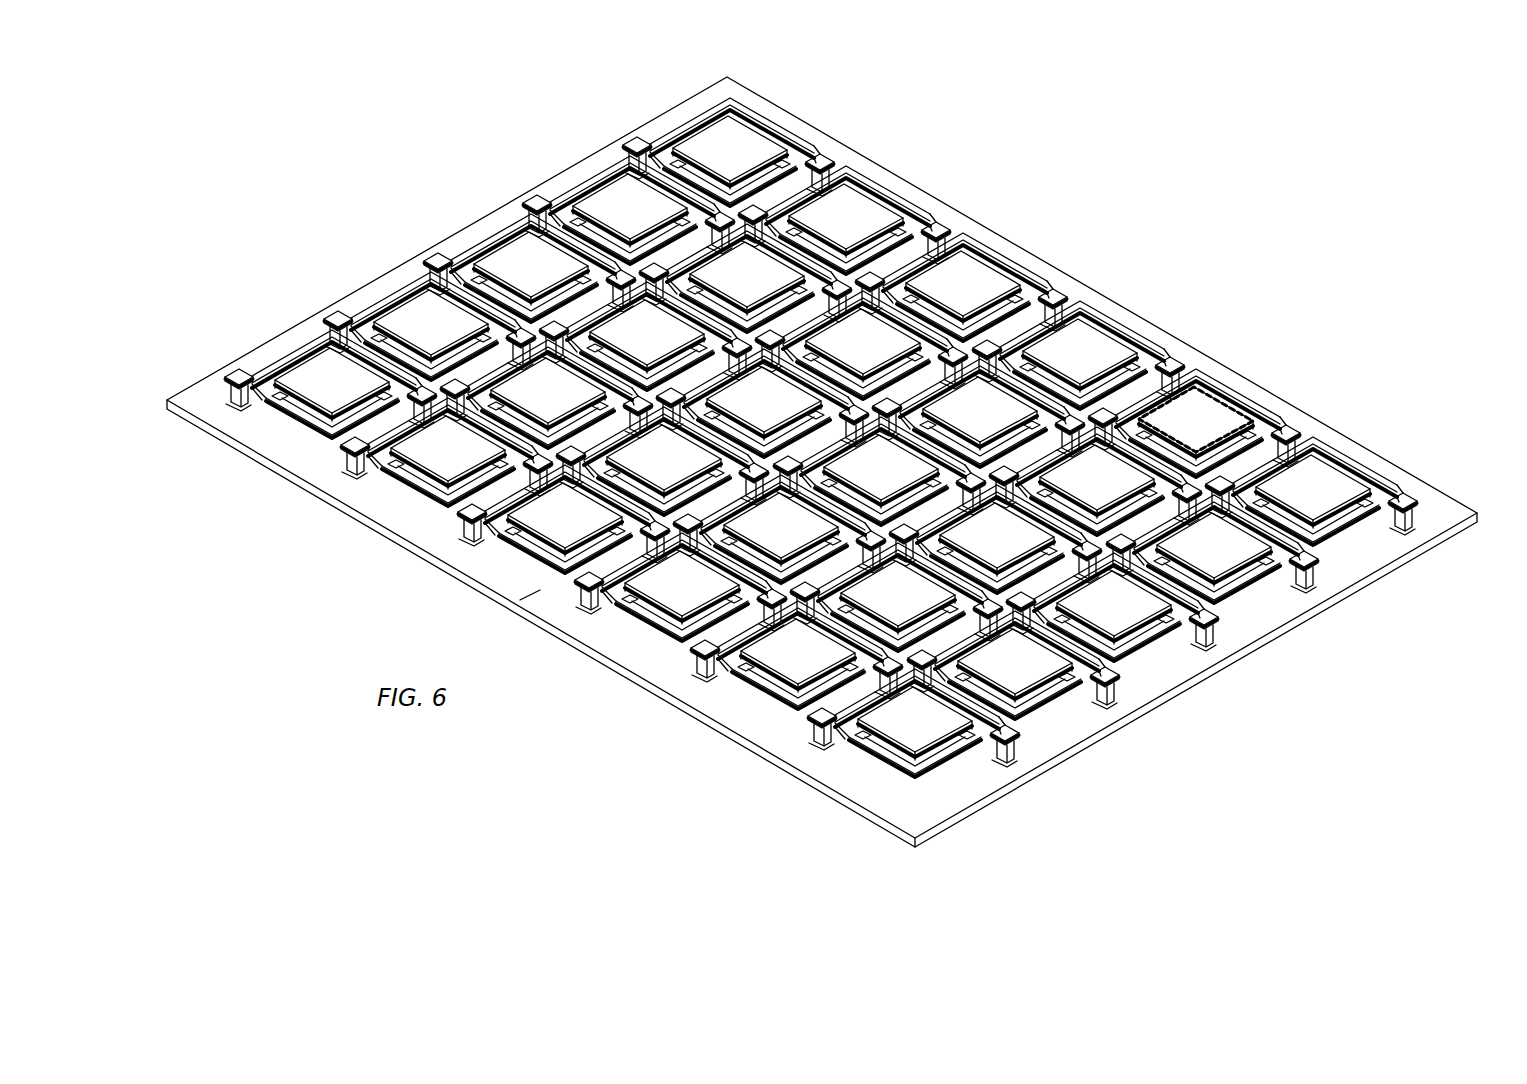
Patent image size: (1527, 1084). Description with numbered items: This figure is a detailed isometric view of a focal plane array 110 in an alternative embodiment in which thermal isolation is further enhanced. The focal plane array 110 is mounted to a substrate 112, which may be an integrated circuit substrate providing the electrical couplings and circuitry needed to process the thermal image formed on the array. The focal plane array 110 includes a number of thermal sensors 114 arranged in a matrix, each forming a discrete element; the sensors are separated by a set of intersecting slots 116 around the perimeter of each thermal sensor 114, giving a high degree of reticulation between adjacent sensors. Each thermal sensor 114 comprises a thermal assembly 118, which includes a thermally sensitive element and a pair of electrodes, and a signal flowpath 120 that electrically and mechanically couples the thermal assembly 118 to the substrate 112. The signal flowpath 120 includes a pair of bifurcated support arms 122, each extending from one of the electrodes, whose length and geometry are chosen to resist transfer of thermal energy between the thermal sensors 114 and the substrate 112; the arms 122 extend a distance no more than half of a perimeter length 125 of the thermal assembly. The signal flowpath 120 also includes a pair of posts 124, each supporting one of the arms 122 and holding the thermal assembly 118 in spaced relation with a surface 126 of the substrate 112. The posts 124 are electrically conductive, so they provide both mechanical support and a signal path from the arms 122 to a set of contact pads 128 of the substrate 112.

The focal plane array 110 is at (1070, 157).
The substrate 112 is at (790, 762).
The thermal sensor 114 is at (745, 150).
The slots 116 is at (843, 163).
The thermal assembly 118 is at (262, 400).
The signal flowpath 120 is at (690, 112).
The support arms 122 is at (372, 312).
The posts 124 is at (515, 210).
The perimeter length 125 is at (1220, 400).
The surface 126 is at (530, 597).
The contact pads 128 is at (478, 548).